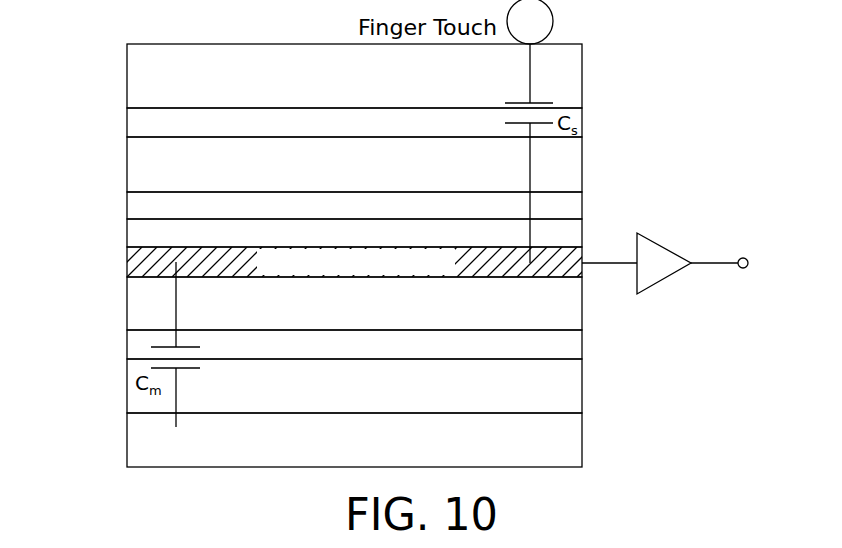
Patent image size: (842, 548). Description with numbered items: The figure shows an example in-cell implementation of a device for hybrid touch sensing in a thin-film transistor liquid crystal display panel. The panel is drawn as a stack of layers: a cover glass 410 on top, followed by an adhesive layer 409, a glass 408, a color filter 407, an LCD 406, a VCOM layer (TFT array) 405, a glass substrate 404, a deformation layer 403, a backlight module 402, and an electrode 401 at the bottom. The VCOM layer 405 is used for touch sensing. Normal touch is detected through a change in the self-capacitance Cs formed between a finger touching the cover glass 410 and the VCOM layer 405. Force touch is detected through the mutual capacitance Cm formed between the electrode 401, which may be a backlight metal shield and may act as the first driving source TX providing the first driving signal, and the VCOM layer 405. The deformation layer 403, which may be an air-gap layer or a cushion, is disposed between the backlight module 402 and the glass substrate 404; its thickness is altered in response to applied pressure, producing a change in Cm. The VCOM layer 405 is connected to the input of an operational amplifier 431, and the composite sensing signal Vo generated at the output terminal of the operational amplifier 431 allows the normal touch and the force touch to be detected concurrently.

The electrode 401 is at (127, 440).
The backlight module 402 is at (127, 387).
The deformation layer 403 is at (127, 347).
The glass substrate 404 is at (127, 306).
The VCOM layer (TFT array) 405 is at (127, 265).
The LCD 406 is at (127, 238).
The color filter 407 is at (127, 206).
The glass 408 is at (127, 165).
The adhesive layer 409 is at (127, 127).
The cover glass 410 is at (127, 79).
The operational amplifier 431 is at (664, 281).